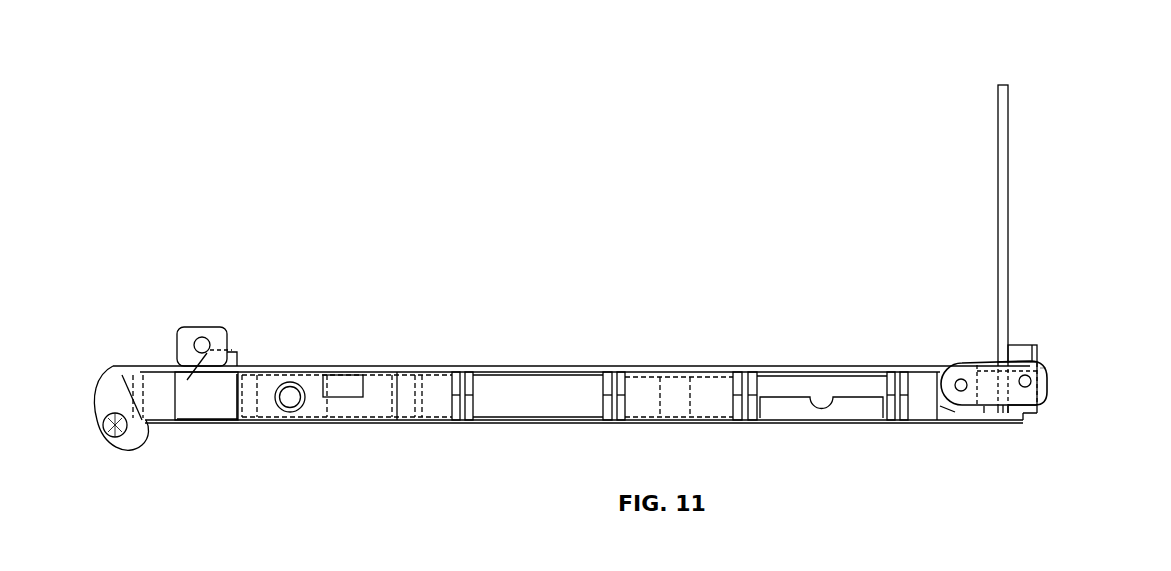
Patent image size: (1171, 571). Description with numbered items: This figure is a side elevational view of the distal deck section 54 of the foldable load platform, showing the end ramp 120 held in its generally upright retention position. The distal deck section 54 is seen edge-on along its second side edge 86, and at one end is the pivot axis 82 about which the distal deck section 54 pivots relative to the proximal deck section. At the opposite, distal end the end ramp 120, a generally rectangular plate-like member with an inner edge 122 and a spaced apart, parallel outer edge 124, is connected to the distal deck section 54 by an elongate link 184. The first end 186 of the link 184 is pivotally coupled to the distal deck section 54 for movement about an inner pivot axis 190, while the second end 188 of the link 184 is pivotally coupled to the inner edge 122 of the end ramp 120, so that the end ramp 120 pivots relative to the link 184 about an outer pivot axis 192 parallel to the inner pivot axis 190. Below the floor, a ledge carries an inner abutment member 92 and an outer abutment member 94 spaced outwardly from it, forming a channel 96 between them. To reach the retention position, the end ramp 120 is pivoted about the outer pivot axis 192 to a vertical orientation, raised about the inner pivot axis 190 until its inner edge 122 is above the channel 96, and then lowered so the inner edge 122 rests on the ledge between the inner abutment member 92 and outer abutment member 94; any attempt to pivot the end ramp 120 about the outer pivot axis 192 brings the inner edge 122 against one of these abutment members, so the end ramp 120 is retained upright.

The distal deck section 54 is at (540, 354).
The pivot axis 82 is at (117, 437).
The second side edge 86 is at (120, 436).
The inner abutment member 92 is at (983, 412).
The outer abutment member 94 is at (1037, 413).
The channel 96 is at (1003, 414).
The end ramp 120 is at (995, 200).
The inner edge 122 is at (1007, 414).
The outer edge 124 is at (1003, 85).
The link 184 is at (992, 373).
The first end 186 is at (948, 372).
The second end 188 is at (1040, 380).
The inner pivot axis 190 is at (952, 404).
The outer pivot axis 192 is at (1030, 378).